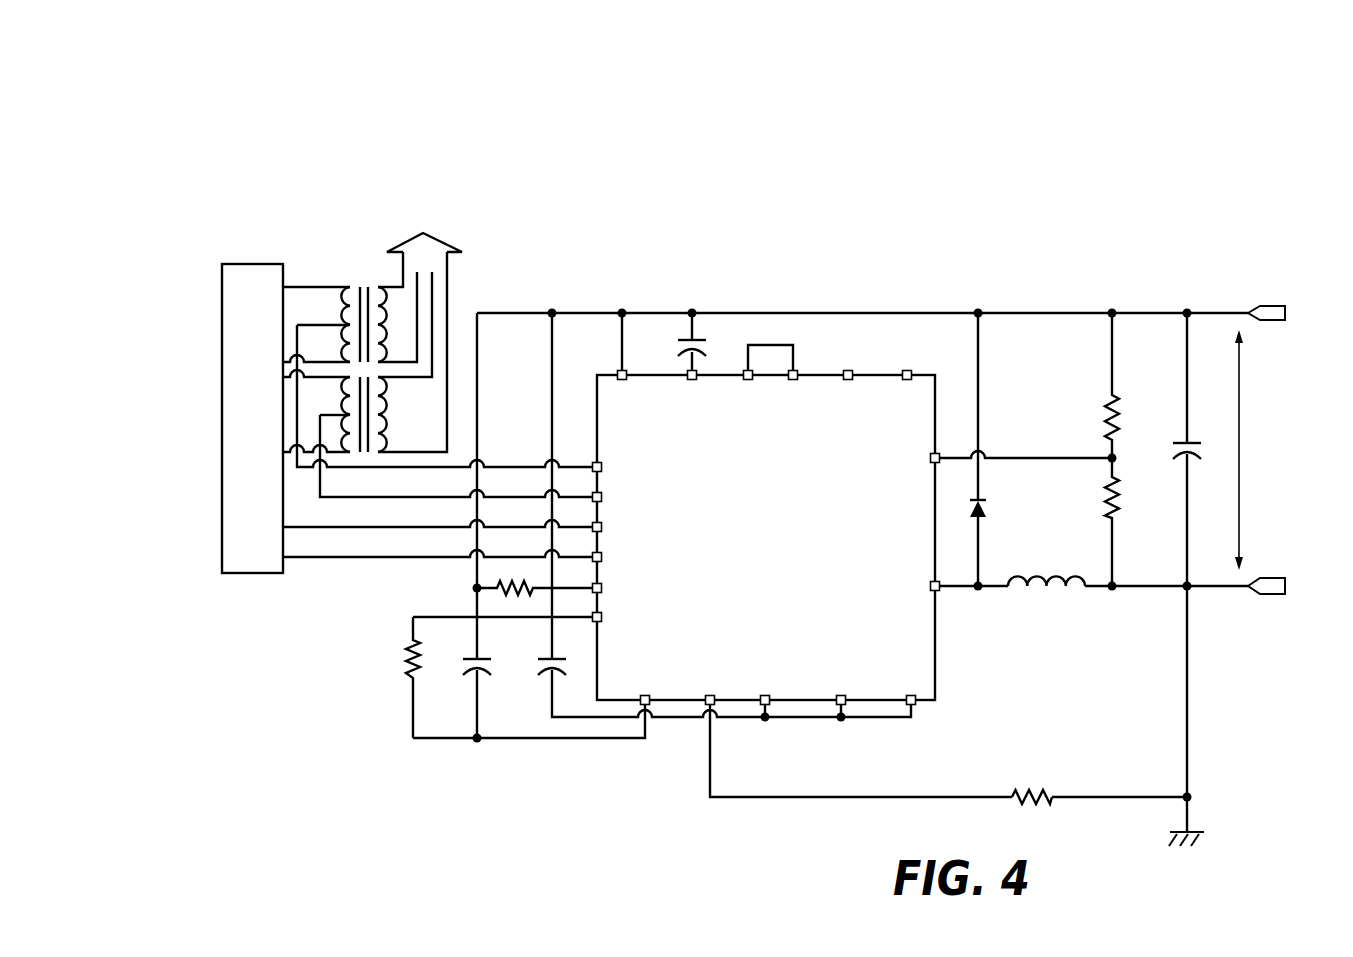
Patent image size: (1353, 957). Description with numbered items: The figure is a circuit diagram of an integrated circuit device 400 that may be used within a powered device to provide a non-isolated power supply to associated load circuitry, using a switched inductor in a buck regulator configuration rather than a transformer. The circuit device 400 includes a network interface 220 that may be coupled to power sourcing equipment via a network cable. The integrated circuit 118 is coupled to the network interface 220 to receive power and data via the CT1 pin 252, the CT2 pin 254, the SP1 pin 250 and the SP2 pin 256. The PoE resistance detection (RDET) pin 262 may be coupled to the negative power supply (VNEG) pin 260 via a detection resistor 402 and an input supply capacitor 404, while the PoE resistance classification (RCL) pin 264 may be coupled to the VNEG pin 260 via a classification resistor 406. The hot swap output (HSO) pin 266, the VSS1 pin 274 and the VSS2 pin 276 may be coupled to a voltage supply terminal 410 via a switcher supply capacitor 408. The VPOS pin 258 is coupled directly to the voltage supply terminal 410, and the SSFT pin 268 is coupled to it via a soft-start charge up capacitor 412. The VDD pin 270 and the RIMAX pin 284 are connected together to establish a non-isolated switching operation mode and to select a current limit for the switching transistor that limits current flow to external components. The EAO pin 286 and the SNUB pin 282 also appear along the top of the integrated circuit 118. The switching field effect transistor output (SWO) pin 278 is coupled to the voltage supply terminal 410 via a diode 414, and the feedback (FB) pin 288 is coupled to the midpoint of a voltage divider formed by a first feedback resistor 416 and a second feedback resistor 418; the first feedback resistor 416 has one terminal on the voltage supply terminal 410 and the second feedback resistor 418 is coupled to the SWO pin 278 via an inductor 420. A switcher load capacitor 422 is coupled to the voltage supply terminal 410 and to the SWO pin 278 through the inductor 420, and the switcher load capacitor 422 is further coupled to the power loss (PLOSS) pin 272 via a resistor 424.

The integrated circuit device 400 is at (977, 120).
The network interface 220 is at (252, 574).
The integrated circuit 118 is at (937, 645).
The CT1 pin 252 is at (601, 470).
The CT2 pin 254 is at (601, 500).
The SP1 pin 250 is at (601, 530).
The SP2 pin 256 is at (601, 560).
The PoE resistance detection (RDET) pin 262 is at (601, 591).
The PoE resistance classification (RCL) pin 264 is at (601, 620).
The VPOS pin 258 is at (620, 371).
The SSFT pin 268 is at (690, 371).
The VDD pin 270 is at (752, 381).
The RIMAX pin 284 is at (797, 371).
The EAO pin 286 is at (847, 371).
The SNUB pin 282 is at (906, 371).
The feedback (FB) pin 288 is at (932, 463).
The switching field effect transistor output (SWO) pin 278 is at (931, 582).
The negative power supply (VNEG) pin 260 is at (649, 704).
The power loss (PLOSS) pin 272 is at (714, 704).
The hot swap output (HSO) pin 266 is at (769, 704).
The VSS1 pin 274 is at (845, 704).
The VSS2 pin 276 is at (915, 704).
The detection resistor 402 is at (497, 590).
The input supply capacitor 404 is at (472, 661).
The classification resistor 406 is at (402, 650).
The switcher supply capacitor 408 is at (540, 661).
The voltage supply terminal 410 is at (903, 313).
The soft-start charge up capacitor 412 is at (700, 345).
The diode 414 is at (986, 513).
The first feedback resistor 416 is at (1106, 407).
The second feedback resistor 418 is at (1117, 510).
The inductor 420 is at (1026, 589).
The switcher load capacitor 422 is at (1182, 443).
The resistor 424 is at (1040, 792).